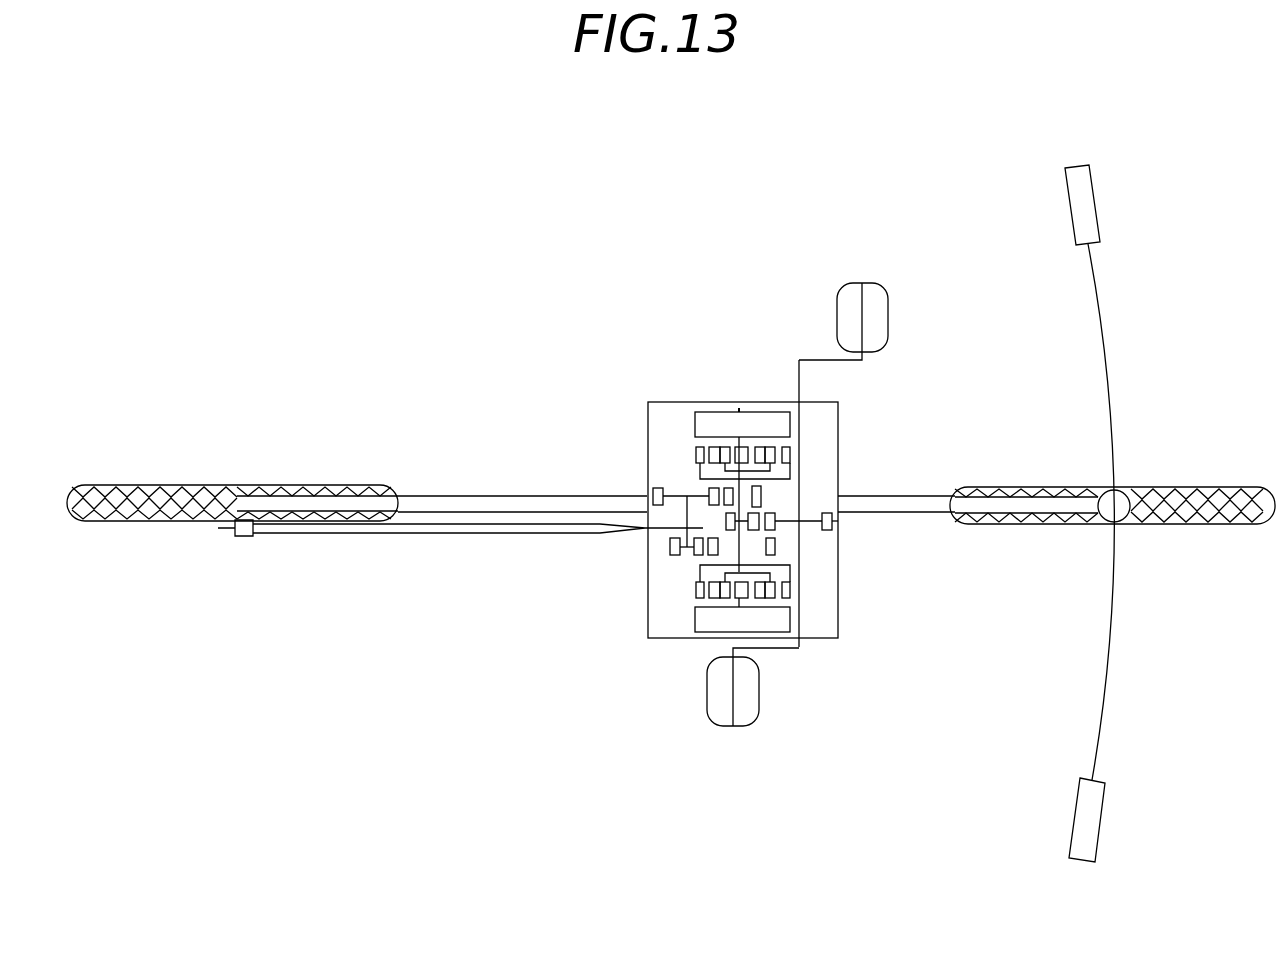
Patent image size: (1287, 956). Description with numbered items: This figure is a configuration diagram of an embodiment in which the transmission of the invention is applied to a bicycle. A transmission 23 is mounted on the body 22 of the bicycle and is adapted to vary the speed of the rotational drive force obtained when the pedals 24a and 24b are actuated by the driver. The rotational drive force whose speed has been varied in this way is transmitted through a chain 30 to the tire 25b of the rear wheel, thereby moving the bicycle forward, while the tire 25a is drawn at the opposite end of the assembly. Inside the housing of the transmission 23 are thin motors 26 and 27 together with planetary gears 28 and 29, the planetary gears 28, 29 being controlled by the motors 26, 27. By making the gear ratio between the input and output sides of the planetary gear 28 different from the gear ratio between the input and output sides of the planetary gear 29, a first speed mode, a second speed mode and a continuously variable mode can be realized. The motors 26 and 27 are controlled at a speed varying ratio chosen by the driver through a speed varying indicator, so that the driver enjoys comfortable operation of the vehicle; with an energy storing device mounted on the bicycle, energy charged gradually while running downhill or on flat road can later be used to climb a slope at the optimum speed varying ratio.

The body 22 is at (483, 495).
The transmission 23 is at (838, 598).
The pedal 24a is at (888, 300).
The pedal 24b is at (759, 695).
The tire 25a is at (1180, 487).
The tire of rear wheel 25b is at (210, 484).
The thin motor 26 is at (692, 632).
The thin motor 27 is at (712, 410).
The planetary gear 28 is at (696, 591).
The planetary gear 29 is at (696, 452).
The chain 30 is at (522, 535).